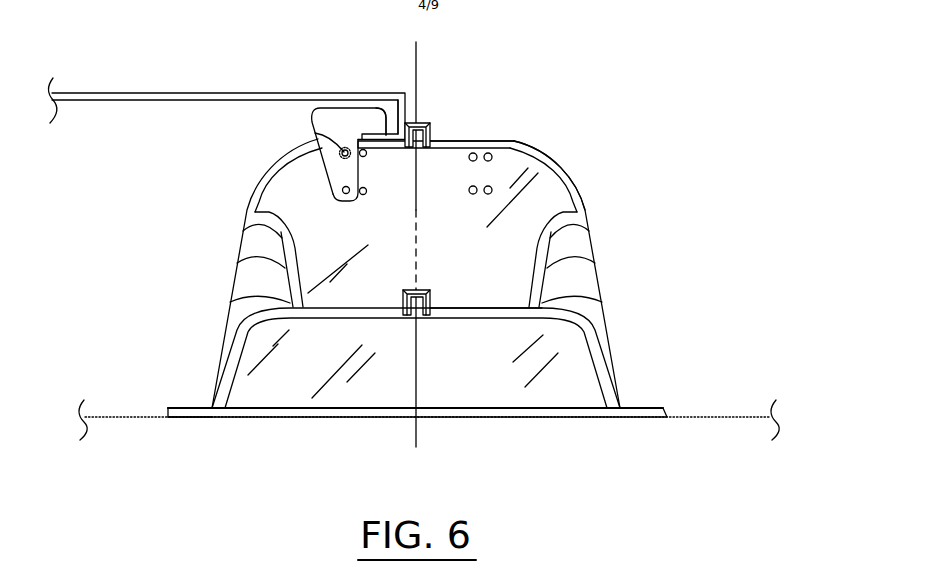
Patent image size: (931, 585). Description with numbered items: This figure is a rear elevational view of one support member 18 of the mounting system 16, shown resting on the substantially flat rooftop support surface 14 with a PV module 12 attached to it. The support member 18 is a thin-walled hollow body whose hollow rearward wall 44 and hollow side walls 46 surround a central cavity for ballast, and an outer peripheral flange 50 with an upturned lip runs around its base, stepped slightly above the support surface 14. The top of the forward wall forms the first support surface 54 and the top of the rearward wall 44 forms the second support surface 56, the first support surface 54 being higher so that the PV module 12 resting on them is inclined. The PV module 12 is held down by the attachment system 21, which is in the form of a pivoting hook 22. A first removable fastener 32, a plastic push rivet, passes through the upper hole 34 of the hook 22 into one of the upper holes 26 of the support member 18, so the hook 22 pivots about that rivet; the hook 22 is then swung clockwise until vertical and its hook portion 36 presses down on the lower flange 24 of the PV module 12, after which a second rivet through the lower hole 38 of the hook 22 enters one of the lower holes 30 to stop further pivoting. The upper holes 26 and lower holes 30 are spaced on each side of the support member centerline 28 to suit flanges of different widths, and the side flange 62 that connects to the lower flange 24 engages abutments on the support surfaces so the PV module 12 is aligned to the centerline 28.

The PV module 12 is at (186, 92).
The support surface 14 is at (707, 415).
The mounting system 16 is at (580, 76).
The support member 18 is at (622, 284).
The attachment system 21 is at (298, 122).
The pivoting hook 22 is at (338, 108).
The lower flange 24 is at (392, 142).
The upper holes 26 is at (468, 150).
The support member centerline 28 is at (418, 432).
The lower holes 30 is at (490, 184).
The first removable fastener 32 is at (315, 133).
The upper hole of the hook 34 is at (348, 157).
The hook portion 36 is at (387, 120).
The lower hole of the hook 38 is at (342, 192).
The rearward wall 44 is at (267, 397).
The side walls 46 is at (233, 283).
The outer peripheral flange 50 is at (188, 402).
The first support surface 54 is at (490, 140).
The second support surface 56 is at (503, 307).
The side flange 62 is at (406, 113).